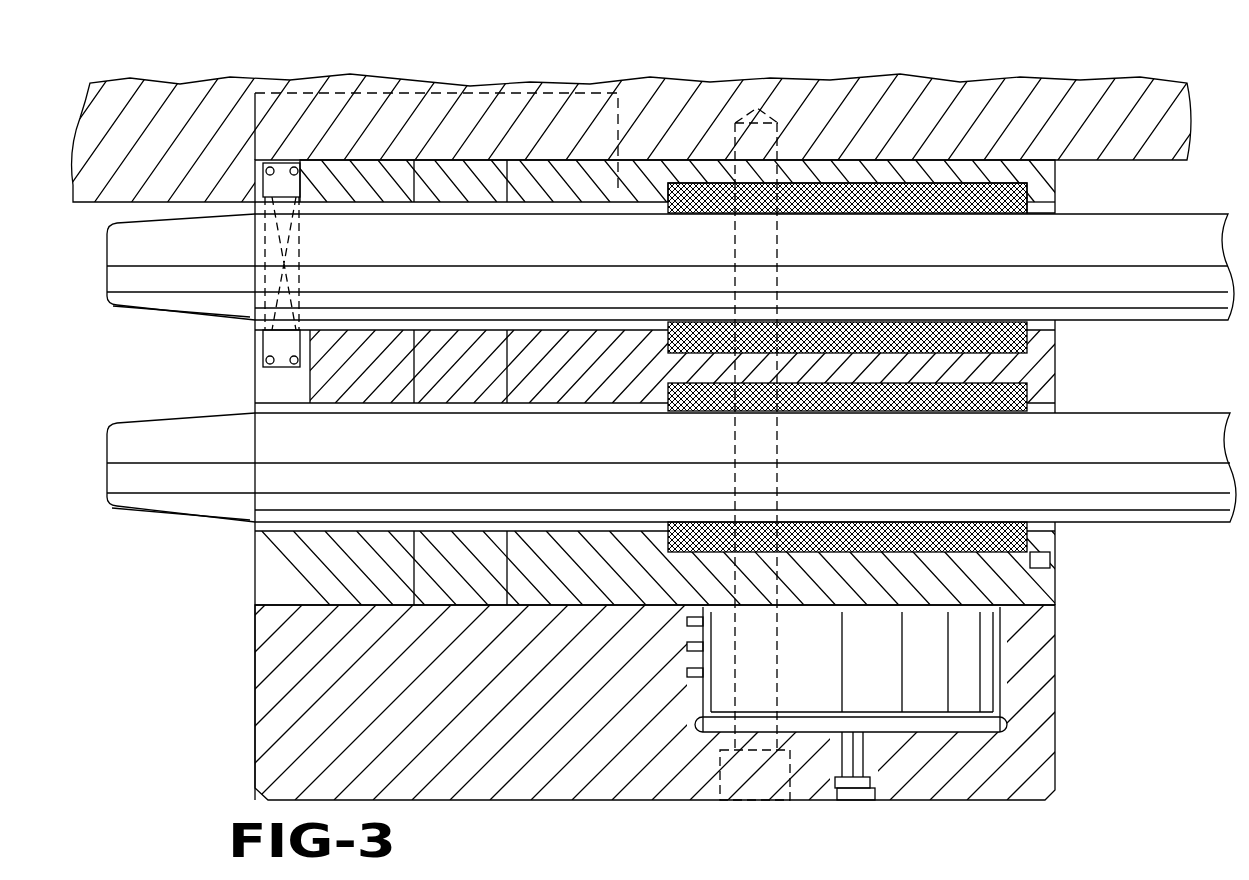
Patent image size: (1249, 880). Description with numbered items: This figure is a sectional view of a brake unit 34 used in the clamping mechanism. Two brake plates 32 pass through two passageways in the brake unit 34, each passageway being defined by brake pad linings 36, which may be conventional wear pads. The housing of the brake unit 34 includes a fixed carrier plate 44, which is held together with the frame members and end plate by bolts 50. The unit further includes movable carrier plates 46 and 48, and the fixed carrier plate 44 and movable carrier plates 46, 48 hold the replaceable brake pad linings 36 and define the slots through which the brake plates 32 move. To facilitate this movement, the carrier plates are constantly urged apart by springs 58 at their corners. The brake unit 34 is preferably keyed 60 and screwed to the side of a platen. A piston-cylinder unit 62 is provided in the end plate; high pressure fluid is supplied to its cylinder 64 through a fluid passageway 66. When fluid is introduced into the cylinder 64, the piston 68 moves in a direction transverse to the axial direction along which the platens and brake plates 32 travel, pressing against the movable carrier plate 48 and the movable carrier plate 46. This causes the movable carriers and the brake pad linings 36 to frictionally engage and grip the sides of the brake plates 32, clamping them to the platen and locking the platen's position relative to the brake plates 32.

The brake plate 32 is at (824, 263).
The brake unit 34 is at (245, 593).
The brake pad lining 36 is at (1025, 198).
The fixed carrier plate 44 is at (1040, 180).
The movable carrier plate 46 is at (1043, 400).
The movable carrier plate 48 is at (1043, 593).
The bolt 50 is at (740, 793).
The spring 58 is at (275, 347).
The key 60 is at (289, 103).
The piston-cylinder unit 62 is at (913, 745).
The cylinder 64 is at (828, 722).
The fluid passageway 66 is at (858, 800).
The piston 68 is at (906, 651).